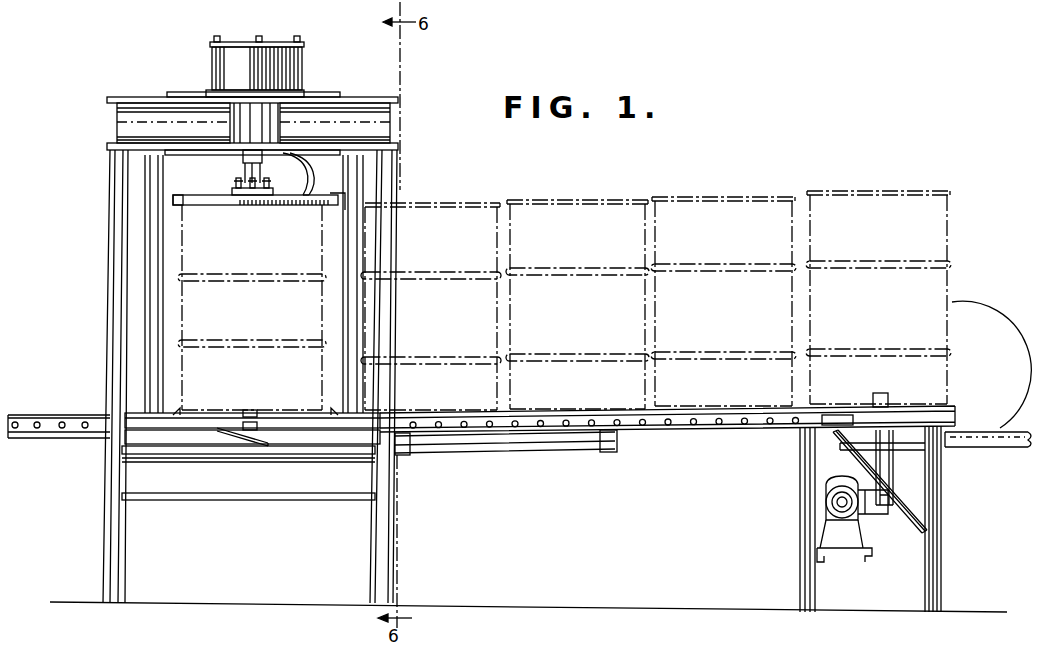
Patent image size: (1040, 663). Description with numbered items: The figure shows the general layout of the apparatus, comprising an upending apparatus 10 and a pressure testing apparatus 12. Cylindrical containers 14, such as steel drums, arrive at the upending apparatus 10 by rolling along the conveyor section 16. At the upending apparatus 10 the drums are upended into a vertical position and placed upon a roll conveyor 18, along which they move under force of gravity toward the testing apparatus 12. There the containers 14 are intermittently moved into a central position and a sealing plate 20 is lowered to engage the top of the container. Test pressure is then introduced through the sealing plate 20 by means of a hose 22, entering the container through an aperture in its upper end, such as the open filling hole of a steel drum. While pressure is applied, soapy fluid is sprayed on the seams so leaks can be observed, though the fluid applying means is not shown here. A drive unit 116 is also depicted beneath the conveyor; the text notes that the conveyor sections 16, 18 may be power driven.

The upending apparatus 10 is at (984, 154).
The pressure testing apparatus 12 is at (84, 126).
The cylindrical containers 14 is at (440, 202).
The conveyor section 16 is at (988, 455).
The roll conveyor 18 is at (686, 432).
The sealing plate 20 is at (178, 203).
The hose 22 is at (312, 170).
The drive motor 116 is at (816, 493).